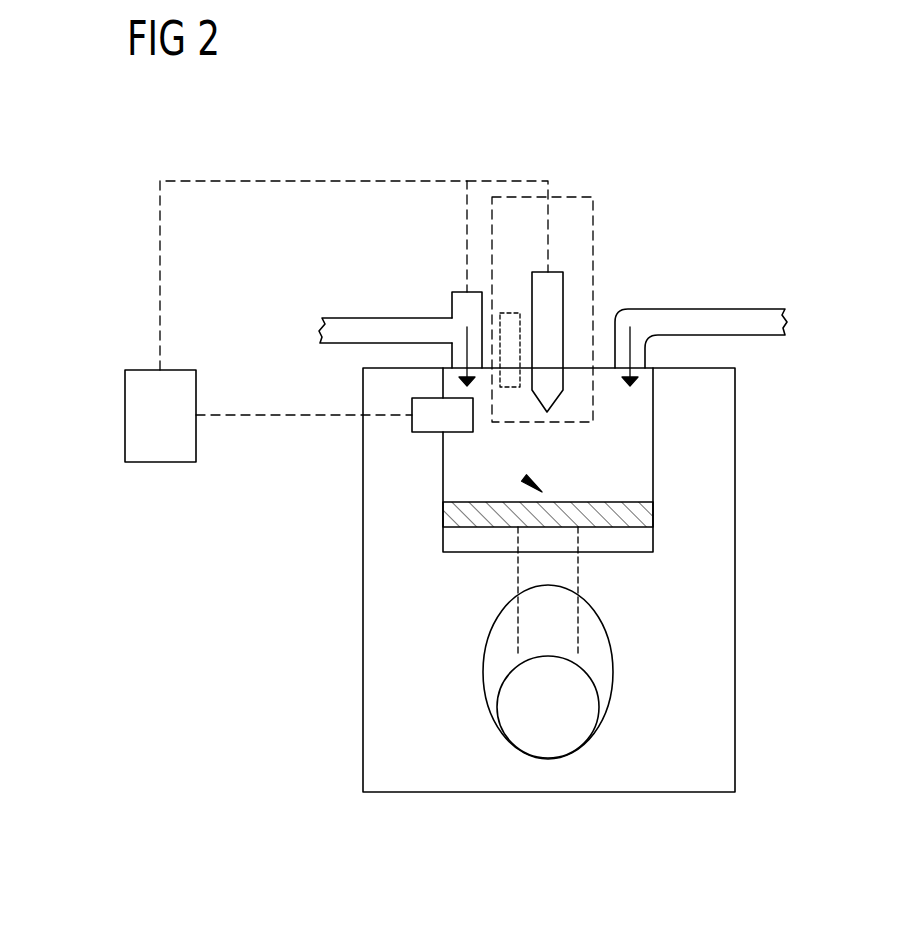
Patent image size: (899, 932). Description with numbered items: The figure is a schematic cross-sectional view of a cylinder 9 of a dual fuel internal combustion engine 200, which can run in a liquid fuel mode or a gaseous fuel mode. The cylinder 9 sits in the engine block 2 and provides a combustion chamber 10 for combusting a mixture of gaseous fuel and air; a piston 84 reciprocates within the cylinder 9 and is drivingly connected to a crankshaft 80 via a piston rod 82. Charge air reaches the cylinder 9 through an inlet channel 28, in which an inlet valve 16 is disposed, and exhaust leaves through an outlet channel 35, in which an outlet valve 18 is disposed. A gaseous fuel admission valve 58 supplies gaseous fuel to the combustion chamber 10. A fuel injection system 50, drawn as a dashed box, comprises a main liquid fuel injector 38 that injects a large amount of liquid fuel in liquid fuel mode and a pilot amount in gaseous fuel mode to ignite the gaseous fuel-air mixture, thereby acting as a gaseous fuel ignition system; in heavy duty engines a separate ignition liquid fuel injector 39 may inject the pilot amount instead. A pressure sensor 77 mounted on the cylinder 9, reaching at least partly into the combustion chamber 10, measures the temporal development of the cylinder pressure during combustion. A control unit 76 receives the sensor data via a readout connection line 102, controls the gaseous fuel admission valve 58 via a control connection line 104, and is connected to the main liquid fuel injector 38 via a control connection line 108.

The DF internal combustion engine 200 is at (535, 111).
The engine block 2 is at (736, 603).
The cylinder 9 is at (655, 450).
The piston 84 is at (655, 512).
The pressure sensor 77 is at (425, 440).
The control unit 76 is at (160, 462).
The readout connection line 102 is at (297, 418).
The control connection line 104 is at (462, 224).
The control connection line 108 is at (548, 181).
The fuel injection system 50 is at (595, 255).
The main liquid fuel injector 38 is at (548, 282).
The ignition liquid fuel injector 39 is at (507, 316).
The gaseous fuel admission valve 58 is at (462, 300).
The inlet channel 28 is at (400, 320).
The outlet channel 35 is at (722, 322).
The inlet valve 16 is at (472, 385).
The outlet valve 18 is at (630, 392).
The combustion chamber 10 is at (524, 478).
The piston rod 82 is at (580, 580).
The crankshaft 80 is at (585, 722).